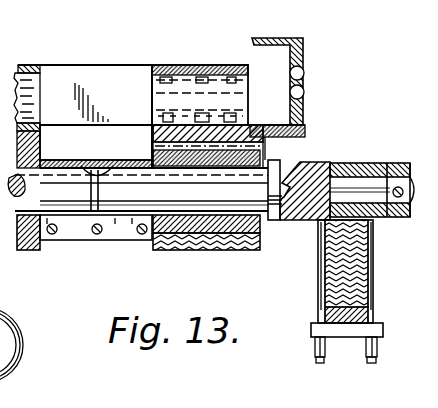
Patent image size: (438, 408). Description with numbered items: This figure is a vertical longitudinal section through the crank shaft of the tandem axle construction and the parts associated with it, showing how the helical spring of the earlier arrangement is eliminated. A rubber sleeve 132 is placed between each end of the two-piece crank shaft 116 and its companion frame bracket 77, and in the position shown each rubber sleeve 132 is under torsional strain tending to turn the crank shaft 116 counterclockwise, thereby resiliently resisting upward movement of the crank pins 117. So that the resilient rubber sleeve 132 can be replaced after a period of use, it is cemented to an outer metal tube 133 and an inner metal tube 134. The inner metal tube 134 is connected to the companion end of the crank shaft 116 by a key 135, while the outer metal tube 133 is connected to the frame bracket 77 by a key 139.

The frame bracket 77 is at (110, 166).
The crank shaft 116 is at (96, 151).
The crank pin 117 is at (413, 178).
The rubber sleeve 132 is at (263, 223).
The outer metal tube 133 is at (258, 240).
The inner metal tube 134 is at (150, 216).
The key 135 is at (272, 162).
The key 139 is at (287, 146).